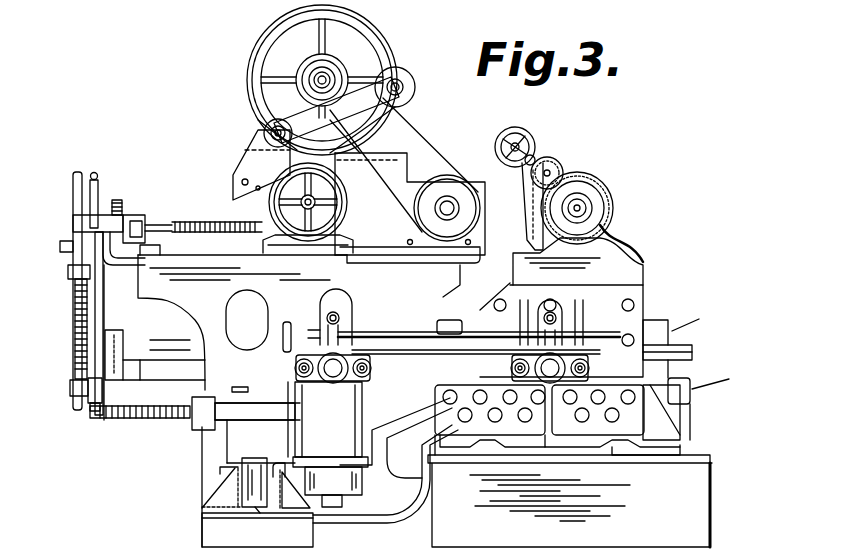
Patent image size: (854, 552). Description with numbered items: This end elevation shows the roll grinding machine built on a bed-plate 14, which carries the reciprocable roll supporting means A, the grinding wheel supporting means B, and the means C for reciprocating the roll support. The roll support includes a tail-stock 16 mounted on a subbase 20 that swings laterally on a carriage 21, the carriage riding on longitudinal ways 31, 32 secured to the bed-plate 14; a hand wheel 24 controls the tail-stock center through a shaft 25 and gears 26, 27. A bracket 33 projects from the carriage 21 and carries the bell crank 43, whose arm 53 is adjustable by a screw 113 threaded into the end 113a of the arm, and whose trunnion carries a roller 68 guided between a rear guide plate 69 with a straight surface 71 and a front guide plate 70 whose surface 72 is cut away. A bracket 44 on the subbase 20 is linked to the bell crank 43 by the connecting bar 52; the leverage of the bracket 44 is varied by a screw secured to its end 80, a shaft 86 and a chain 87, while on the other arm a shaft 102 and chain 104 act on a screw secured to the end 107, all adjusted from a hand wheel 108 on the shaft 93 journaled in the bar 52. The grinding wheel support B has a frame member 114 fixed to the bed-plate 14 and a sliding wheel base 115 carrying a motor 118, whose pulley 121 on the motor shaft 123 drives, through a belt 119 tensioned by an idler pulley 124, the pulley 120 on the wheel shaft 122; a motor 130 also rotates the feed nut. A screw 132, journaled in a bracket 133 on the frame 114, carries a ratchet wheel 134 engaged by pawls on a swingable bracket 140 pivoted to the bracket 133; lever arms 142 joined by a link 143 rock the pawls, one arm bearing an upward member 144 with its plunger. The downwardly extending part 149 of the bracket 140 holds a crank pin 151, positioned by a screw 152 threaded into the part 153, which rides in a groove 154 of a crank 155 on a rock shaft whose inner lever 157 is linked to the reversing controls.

The motor 118 is at (265, 39).
The pulley 121 is at (338, 66).
The shaft 123 is at (312, 76).
The idler pulley 124 is at (411, 87).
The grinding wheel supporting means B is at (259, 152).
The belt 119 is at (420, 150).
The grinding wheel base 115 is at (415, 188).
The motor 130 is at (310, 225).
The pulley 120 is at (481, 208).
The shaft 122 is at (452, 200).
The hand wheel 24 is at (528, 137).
The shaft 25 is at (536, 160).
The gear 26 is at (562, 168).
The gear 27 is at (608, 190).
The tail-stock 16 is at (608, 252).
The bed-plate 14 is at (696, 491).
The screw 132 is at (216, 217).
The bracket 133 is at (138, 226).
The swingable bracket 140 is at (120, 214).
The ratchet wheel 134 is at (116, 198).
The upwardly extending member 144 is at (97, 192).
The downwardly extending part 149 is at (90, 309).
The lever arm 142 is at (78, 233).
The link 143 is at (60, 246).
The part 153 is at (68, 272).
The screw 152 is at (75, 318).
The crank pin 151 is at (88, 392).
The groove 154 is at (118, 345).
The crank 155 is at (130, 362).
The screw 113 is at (127, 420).
The end of arm 113a is at (192, 428).
The front guide plate 70 is at (212, 488).
The engaged surface 72 is at (246, 470).
The surface 71 is at (270, 470).
The roller 68 is at (257, 507).
The rear guide plate 69 is at (290, 495).
The arm 53 is at (261, 392).
The frame member 114 is at (243, 369).
The shaft 102 is at (338, 315).
The chain 104 is at (316, 333).
The hand wheel 108 is at (286, 320).
The shaft 93 is at (381, 332).
The connecting bar 52 is at (485, 294).
The bell crank 43 is at (345, 439).
The end of arm 107 is at (304, 396).
The bracket 33 is at (402, 474).
The lever 157 is at (403, 405).
The way 32 is at (455, 445).
The way 31 is at (647, 450).
The end of bracket 80 is at (524, 356).
The shaft 86 is at (560, 317).
The chain 87 is at (565, 351).
The bracket 44 is at (625, 323).
The means to reciprocate the roll supporting means C is at (679, 324).
The subbase 20 is at (694, 354).
The reciprocable roll supporting means A is at (708, 385).
The carriage 21 is at (686, 413).